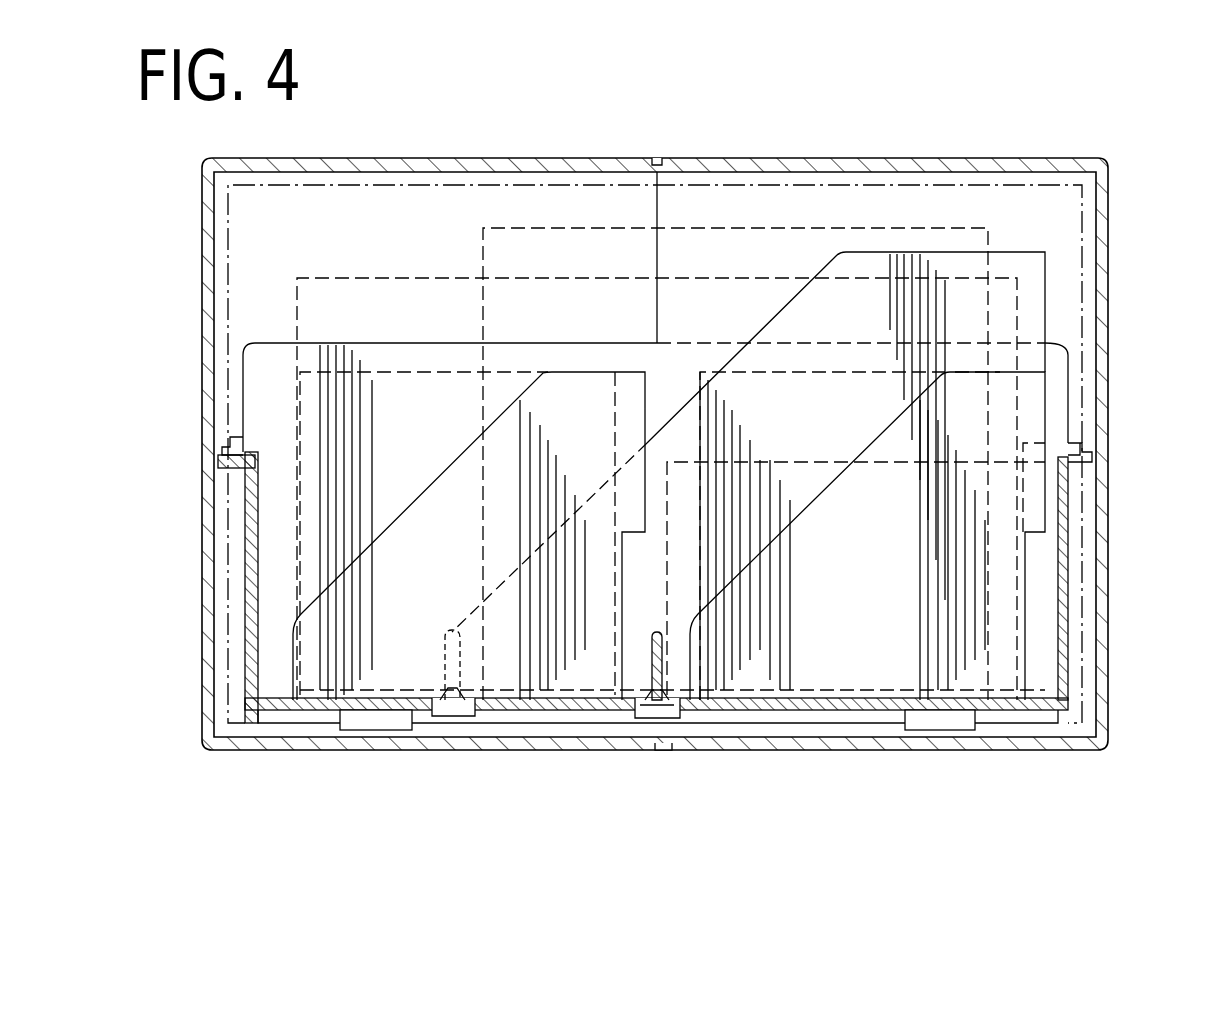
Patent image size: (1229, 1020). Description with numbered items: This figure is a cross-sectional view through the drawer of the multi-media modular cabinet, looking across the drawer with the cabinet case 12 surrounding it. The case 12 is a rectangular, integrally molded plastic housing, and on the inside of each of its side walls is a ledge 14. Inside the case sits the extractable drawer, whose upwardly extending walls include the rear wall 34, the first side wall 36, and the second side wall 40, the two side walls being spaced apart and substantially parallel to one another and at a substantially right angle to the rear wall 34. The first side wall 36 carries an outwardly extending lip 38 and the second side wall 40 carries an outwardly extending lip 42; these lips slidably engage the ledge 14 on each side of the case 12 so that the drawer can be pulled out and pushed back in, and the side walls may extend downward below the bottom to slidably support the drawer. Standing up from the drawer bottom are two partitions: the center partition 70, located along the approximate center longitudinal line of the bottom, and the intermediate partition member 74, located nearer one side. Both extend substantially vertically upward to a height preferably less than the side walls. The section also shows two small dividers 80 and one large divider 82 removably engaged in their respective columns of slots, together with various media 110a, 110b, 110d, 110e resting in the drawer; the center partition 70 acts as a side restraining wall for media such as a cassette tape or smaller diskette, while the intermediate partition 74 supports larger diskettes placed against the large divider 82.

The cabinet case 12 is at (456, 160).
The ledge 14 is at (226, 445).
The rear wall 34 is at (268, 365).
The first side wall 36 is at (1065, 540).
The lip 38 is at (1082, 462).
The second side wall 40 is at (248, 565).
The lip 42 is at (230, 470).
The center partition 70 is at (650, 668).
The intermediate partition member 74 is at (470, 700).
The small divider 80 is at (762, 665).
The large divider 82 is at (1027, 265).
The card position a 110a is at (1040, 630).
The card position b 110b is at (836, 425).
The card position d 110d is at (352, 295).
The card position e 110e is at (590, 245).